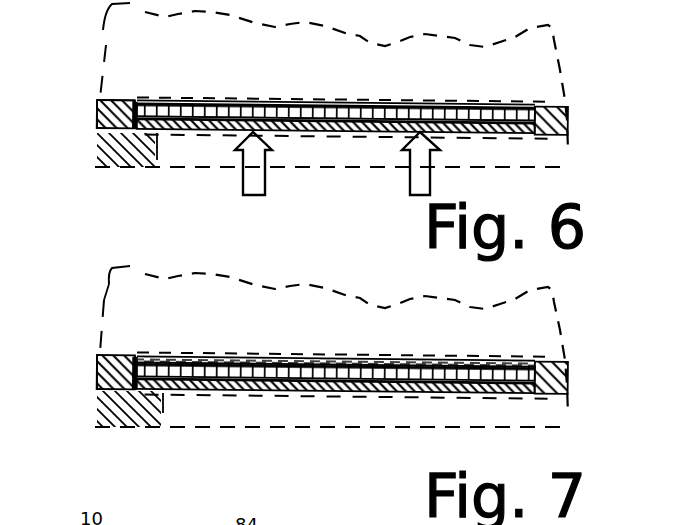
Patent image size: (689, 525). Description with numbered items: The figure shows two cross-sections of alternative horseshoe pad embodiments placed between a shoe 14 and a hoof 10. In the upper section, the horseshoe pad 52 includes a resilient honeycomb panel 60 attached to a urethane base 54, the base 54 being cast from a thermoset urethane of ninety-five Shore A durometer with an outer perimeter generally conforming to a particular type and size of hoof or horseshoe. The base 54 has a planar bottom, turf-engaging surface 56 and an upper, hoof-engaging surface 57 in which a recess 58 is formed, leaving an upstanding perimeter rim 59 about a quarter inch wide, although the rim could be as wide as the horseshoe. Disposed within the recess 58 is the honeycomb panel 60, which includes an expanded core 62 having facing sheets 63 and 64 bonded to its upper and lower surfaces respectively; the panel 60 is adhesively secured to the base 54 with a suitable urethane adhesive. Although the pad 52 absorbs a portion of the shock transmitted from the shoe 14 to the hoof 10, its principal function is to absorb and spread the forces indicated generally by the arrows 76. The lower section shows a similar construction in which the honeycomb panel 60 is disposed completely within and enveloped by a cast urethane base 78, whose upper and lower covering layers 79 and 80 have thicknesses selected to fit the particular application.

In FIG. 7, the hoof 10 is at (106, 260).
In FIG. 6, the shoe 14 is at (122, 152).
In FIG. 7, the shoe 14 is at (122, 412).
In FIG. 6, the horseshoe pad 52 is at (97, 125).
In FIG. 7, the horseshoe pad 52 is at (94, 388).
In FIG. 6, the urethane base 54 is at (218, 131).
In FIG. 6, the turf-engaging surface 56 is at (155, 135).
In FIG. 6, the hoof-engaging surface 57 is at (117, 100).
In FIG. 6, the recess 58 is at (135, 102).
In FIG. 6, the perimeter rim 59 is at (97, 108).
In FIG. 6, the honeycomb panel 60 is at (226, 100).
In FIG. 7, the honeycomb panel 60 is at (382, 357).
In FIG. 6, the expanded core 62 is at (315, 104).
In FIG. 6, the upper facing sheet 63 is at (397, 105).
In FIG. 6, the lower facing sheet 64 is at (458, 106).
In FIG. 6, the arrows 76 is at (408, 181).
In FIG. 7, the cast urethane base 78 is at (97, 373).
In FIG. 7, the upper covering layer 79 is at (272, 356).
In FIG. 7, the lower covering layer 80 is at (220, 392).